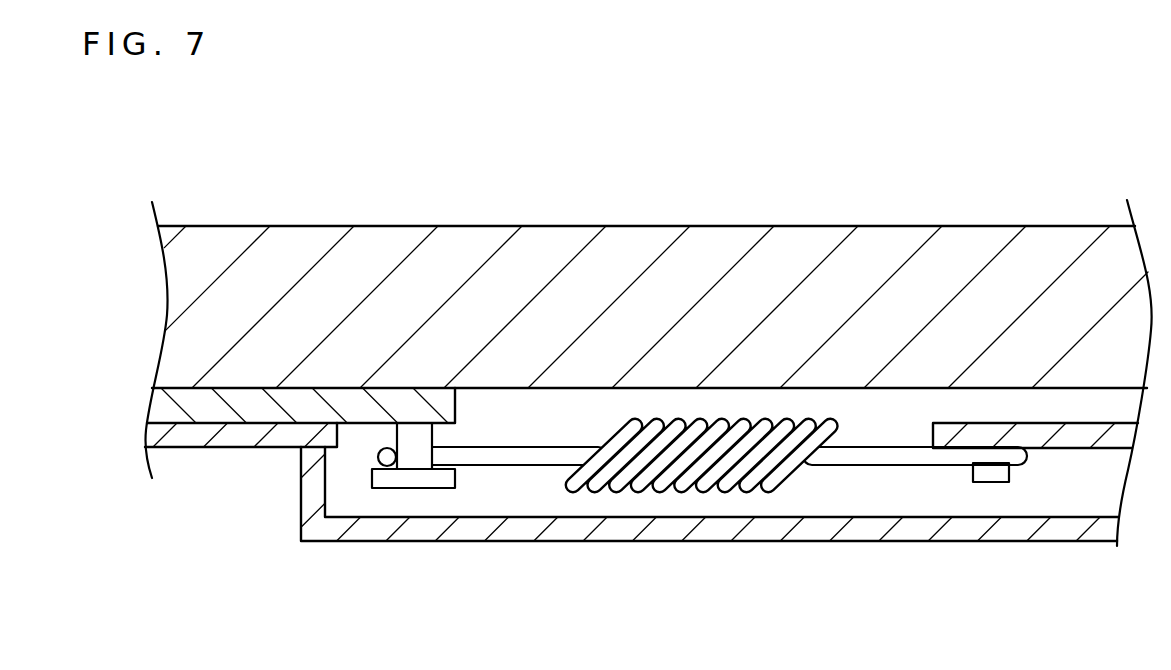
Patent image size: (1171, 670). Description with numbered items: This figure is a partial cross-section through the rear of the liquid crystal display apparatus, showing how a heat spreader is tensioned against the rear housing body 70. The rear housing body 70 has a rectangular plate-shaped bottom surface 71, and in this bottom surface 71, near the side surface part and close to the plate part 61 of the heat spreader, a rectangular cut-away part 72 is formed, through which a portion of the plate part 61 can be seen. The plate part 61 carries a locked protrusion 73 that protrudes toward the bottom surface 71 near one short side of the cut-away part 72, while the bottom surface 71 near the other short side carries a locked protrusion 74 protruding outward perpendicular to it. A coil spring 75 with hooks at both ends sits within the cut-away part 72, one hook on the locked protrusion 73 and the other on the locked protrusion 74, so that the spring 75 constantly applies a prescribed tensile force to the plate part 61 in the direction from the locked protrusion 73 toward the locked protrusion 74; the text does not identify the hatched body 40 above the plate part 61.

The table 40 is at (311, 240).
The plate part 61 is at (200, 410).
The rear housing body 70 is at (230, 441).
The bottom surface 71 is at (278, 423).
The cut-away part 72 is at (927, 432).
The locked protrusion 73 is at (415, 462).
The locked protrusion 74 is at (988, 483).
The spring 75 is at (683, 482).